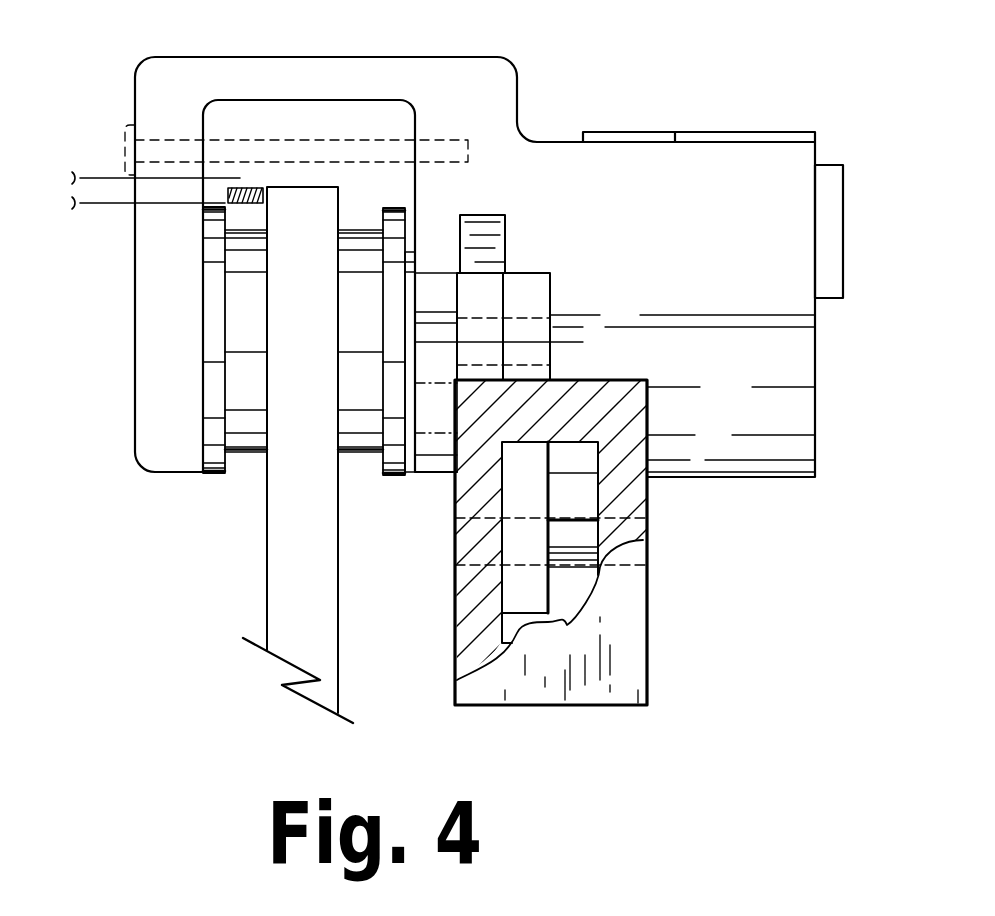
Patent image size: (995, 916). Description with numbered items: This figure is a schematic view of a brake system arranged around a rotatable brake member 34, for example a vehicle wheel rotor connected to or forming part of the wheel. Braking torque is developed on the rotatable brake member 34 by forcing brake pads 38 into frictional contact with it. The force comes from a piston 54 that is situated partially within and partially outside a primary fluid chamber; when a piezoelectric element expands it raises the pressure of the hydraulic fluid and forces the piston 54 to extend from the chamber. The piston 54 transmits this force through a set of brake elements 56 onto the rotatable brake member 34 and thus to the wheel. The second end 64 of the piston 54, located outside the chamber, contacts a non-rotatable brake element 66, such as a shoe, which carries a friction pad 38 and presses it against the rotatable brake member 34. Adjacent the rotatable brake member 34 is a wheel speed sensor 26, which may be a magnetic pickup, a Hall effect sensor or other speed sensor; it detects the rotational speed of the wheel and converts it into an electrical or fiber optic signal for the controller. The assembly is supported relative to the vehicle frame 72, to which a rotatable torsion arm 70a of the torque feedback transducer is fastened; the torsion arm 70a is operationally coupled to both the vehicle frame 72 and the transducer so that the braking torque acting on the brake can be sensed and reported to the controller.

The wheel speed sensor 26 is at (240, 187).
The non-rotatable brake element 66 is at (400, 207).
The second end 64 is at (430, 290).
The piston 54 is at (490, 287).
The brake elements 56 is at (345, 322).
The brake pads 38 is at (240, 437).
The rotatable brake member 34 is at (283, 596).
The vehicle frame 72 is at (640, 647).
The torsion arm 70a is at (533, 593).